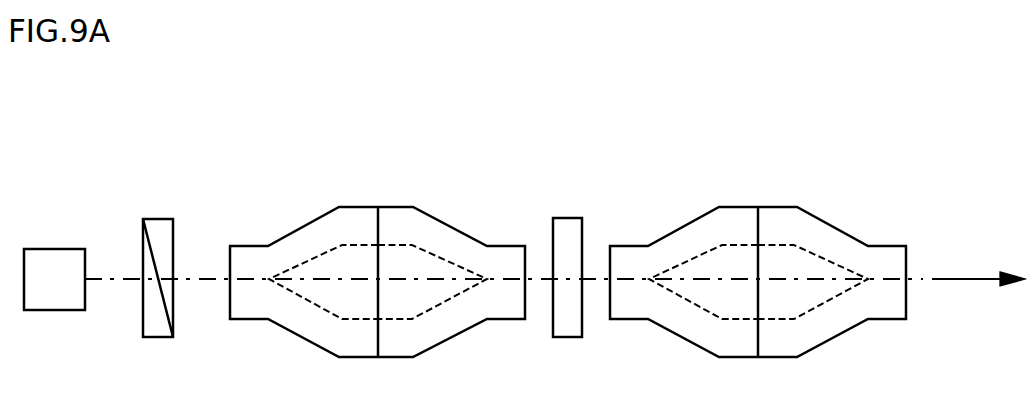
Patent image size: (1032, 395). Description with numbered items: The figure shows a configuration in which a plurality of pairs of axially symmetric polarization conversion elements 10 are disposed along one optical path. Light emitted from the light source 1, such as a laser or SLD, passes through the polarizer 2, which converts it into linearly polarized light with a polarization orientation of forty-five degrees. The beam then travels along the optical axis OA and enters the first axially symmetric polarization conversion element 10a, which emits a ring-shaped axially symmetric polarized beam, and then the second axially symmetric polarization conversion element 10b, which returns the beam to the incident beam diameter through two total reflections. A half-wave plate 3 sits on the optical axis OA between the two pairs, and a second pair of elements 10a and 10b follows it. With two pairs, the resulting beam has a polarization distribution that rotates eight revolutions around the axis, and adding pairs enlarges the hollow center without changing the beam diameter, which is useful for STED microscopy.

The light source 1 is at (58, 249).
The polarizer 2 is at (162, 217).
The half-wave plate 3 is at (572, 218).
The optical axis OA is at (197, 277).
The axially symmetric polarization conversion element 10 is at (568, 241).
The axially symmetric polarization conversion element 10a is at (230, 178).
The axially symmetric polarization conversion element 10b is at (525, 178).